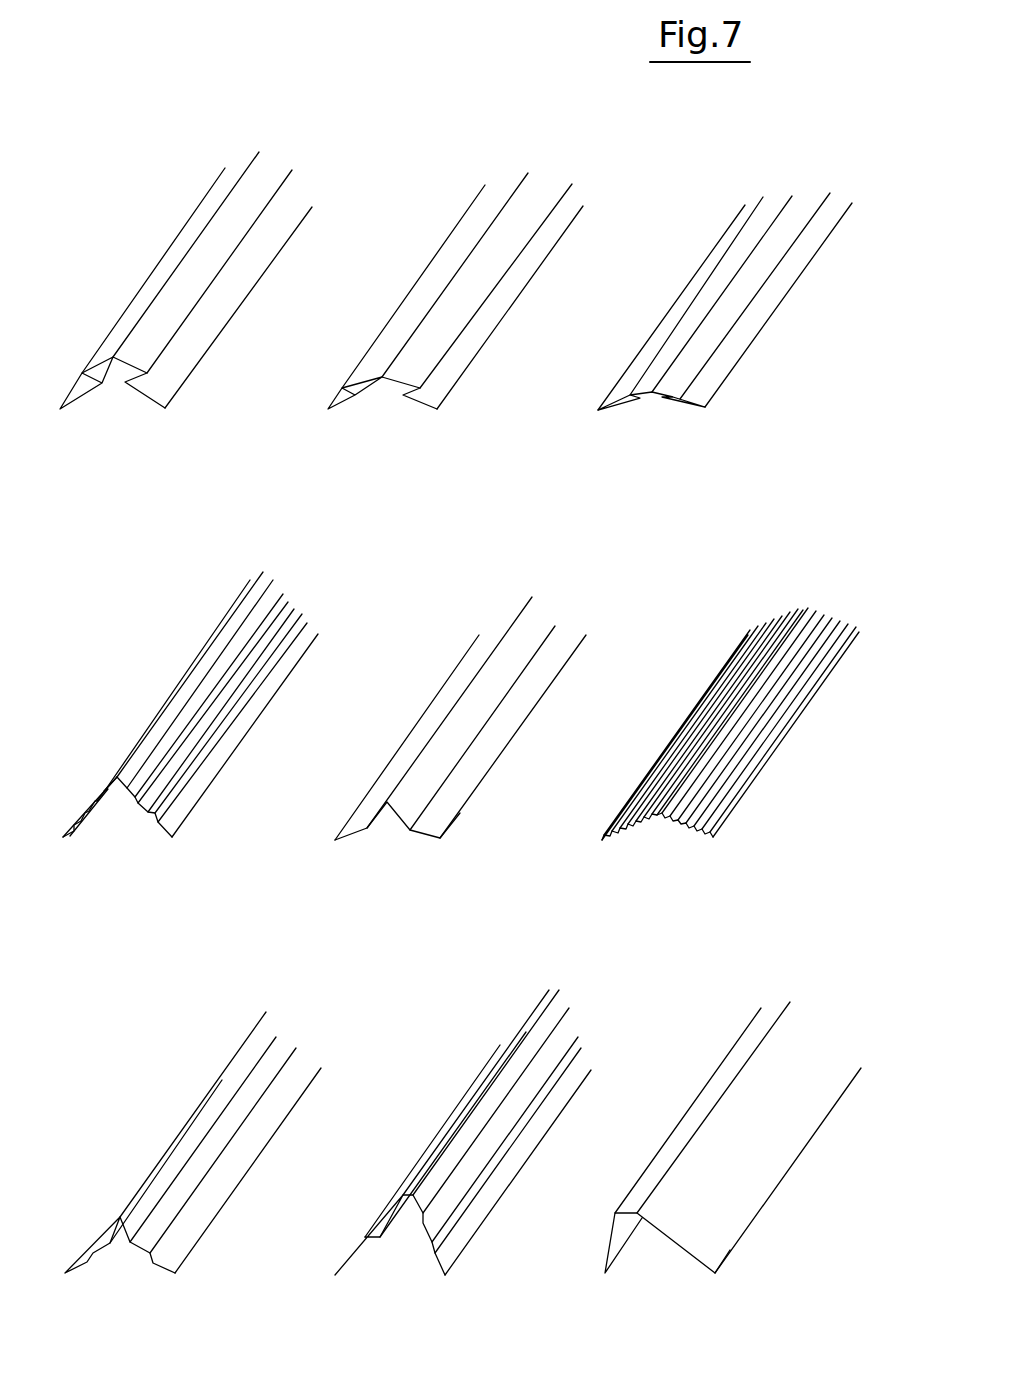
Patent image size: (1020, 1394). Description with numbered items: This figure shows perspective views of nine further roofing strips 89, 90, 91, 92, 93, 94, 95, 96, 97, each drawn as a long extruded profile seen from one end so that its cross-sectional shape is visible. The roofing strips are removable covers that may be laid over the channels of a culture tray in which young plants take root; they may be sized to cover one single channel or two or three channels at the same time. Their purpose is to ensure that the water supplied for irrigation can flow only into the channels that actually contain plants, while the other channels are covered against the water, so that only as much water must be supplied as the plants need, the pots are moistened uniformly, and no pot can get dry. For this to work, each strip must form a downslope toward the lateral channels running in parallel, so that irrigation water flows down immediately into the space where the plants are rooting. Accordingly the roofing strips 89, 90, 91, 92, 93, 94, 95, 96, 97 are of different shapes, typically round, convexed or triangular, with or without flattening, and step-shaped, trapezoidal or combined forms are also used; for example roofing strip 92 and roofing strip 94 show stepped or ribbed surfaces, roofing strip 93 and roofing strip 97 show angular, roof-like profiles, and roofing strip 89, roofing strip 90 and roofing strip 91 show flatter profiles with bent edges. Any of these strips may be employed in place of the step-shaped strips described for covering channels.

The roofing strip 89 is at (160, 392).
The roofing strip 90 is at (437, 395).
The roofing strip 91 is at (707, 397).
The roofing strip 92 is at (157, 805).
The roofing strip 93 is at (413, 805).
The roofing strip 94 is at (690, 805).
The roofing strip 95 is at (147, 1238).
The roofing strip 96 is at (425, 1225).
The roofing strip 97 is at (688, 1230).